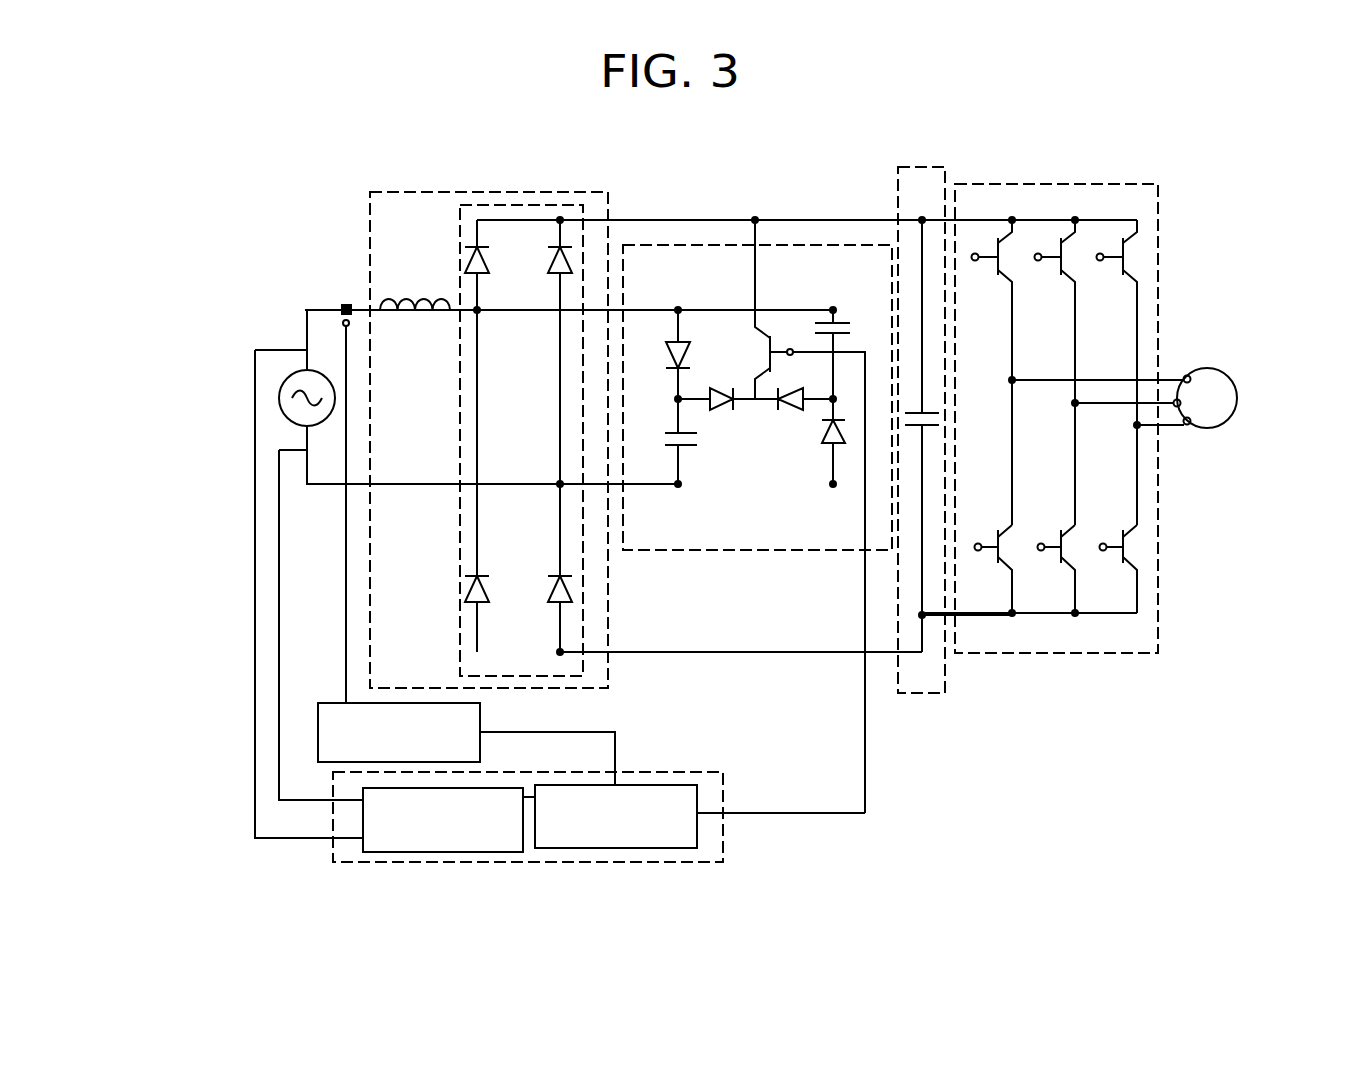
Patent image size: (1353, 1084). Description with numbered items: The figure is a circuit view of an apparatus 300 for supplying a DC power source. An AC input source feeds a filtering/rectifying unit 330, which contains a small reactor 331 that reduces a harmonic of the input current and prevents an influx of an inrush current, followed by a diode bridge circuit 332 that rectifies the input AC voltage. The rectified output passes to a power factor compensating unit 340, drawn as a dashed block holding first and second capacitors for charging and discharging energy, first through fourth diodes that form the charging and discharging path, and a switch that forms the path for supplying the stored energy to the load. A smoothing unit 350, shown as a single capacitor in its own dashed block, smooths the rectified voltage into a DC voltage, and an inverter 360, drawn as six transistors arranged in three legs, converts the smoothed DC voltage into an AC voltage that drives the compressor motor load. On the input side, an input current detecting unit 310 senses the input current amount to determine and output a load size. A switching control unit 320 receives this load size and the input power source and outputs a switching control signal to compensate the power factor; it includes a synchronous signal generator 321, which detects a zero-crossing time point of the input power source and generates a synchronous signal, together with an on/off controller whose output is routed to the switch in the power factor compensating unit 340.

The apparatus for supplying a DC power source 300 is at (1000, 857).
The input current detecting unit 310 is at (318, 721).
The switching control unit 320 is at (528, 865).
The synchronous signal generator 321 is at (445, 855).
The filtering/rectifying unit 330 is at (400, 192).
The small reactor 331 is at (388, 298).
The diode bridge circuit 332 is at (503, 205).
The power factor compensating unit 340 is at (677, 245).
The smoothing unit 350 is at (917, 167).
The inverter 360 is at (1028, 184).